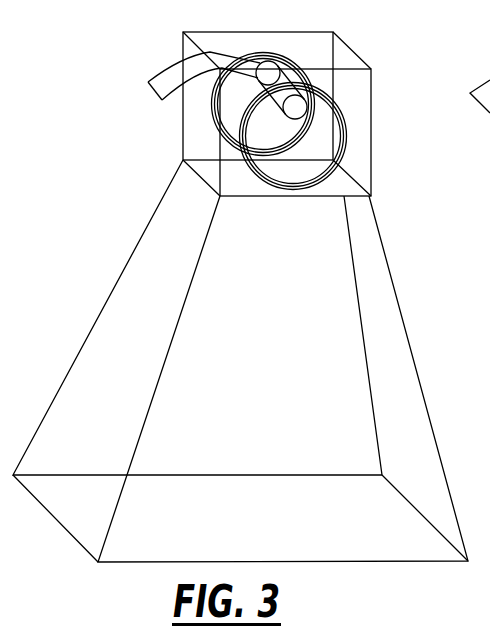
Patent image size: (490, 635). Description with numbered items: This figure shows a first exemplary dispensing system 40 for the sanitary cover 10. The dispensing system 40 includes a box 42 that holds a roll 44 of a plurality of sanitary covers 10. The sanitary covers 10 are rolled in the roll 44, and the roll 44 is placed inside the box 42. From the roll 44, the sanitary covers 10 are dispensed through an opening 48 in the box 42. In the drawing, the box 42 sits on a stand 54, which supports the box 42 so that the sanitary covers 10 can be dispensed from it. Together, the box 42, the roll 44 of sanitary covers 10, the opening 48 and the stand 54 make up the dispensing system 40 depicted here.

The sanitary cover 10 is at (146, 114).
The dispensing system 40 is at (399, 58).
The box 42 is at (371, 128).
The roll 44 is at (320, 87).
The opening 48 is at (207, 50).
The stand 54 is at (396, 285).